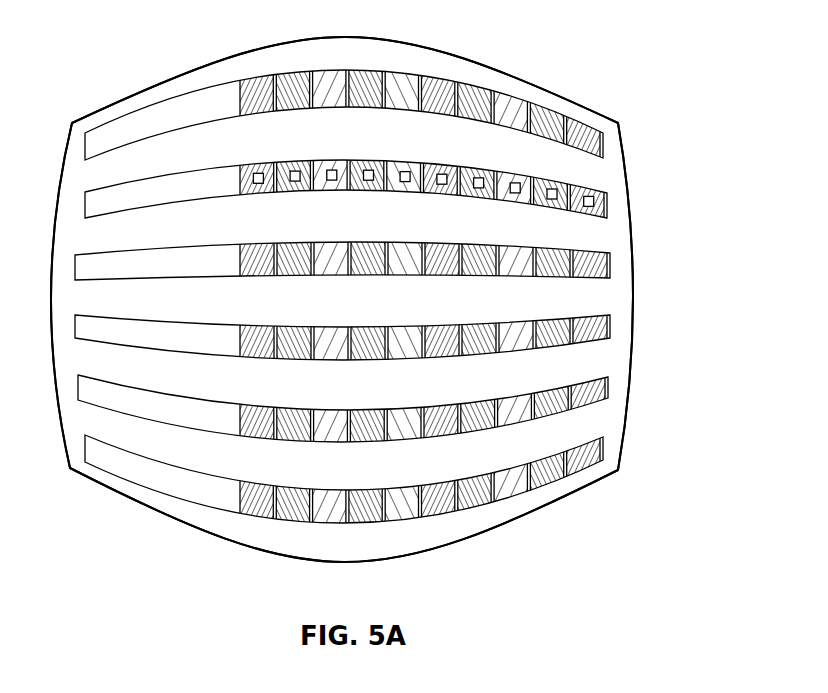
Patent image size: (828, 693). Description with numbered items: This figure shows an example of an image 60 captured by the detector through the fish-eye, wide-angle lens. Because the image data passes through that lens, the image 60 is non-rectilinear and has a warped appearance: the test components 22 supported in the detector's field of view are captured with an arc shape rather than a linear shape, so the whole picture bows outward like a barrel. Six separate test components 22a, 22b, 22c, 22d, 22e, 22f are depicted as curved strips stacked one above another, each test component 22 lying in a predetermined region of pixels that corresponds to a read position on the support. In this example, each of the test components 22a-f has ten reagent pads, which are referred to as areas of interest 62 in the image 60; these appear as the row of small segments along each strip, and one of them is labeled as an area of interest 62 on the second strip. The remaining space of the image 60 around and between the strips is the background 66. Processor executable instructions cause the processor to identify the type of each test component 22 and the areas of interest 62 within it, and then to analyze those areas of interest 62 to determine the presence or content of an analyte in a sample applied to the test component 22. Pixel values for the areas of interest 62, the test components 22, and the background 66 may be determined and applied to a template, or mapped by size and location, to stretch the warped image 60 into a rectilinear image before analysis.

The image 60 is at (357, 35).
The background 66 is at (597, 360).
The test component 22 is at (465, 165).
The test component 22a is at (604, 148).
The test component 22b is at (395, 178).
The test component 22c is at (612, 267).
The test component 22d is at (612, 325).
The test component 22e is at (608, 388).
The test component 22f is at (605, 448).
The area of interest 62 is at (406, 163).